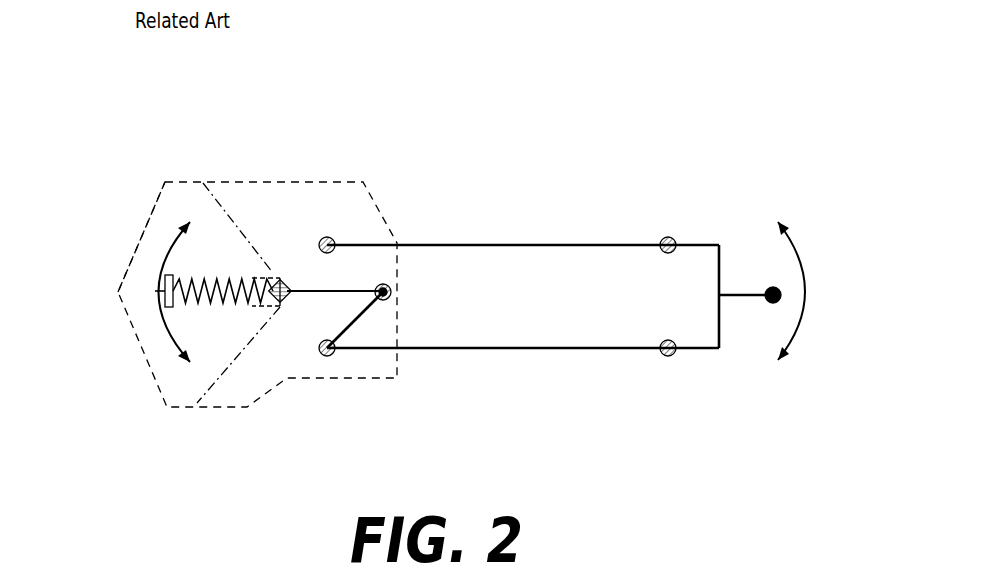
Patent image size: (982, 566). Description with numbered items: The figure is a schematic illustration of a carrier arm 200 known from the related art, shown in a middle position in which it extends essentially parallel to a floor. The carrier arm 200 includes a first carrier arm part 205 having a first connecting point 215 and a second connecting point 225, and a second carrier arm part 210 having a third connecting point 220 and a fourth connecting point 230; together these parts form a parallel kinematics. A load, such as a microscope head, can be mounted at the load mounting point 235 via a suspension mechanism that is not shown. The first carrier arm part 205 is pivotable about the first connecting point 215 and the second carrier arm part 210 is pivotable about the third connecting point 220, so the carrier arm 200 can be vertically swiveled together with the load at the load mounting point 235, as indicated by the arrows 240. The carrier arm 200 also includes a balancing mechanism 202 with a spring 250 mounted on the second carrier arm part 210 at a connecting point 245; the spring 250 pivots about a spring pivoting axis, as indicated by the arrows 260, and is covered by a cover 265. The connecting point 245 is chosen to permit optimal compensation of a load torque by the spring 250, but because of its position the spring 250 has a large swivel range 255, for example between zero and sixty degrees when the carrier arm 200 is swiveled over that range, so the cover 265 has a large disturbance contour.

The carrier arm 200 is at (636, 104).
The balancing mechanism 202 is at (265, 155).
The first carrier arm part 205 is at (458, 245).
The second carrier arm part 210 is at (478, 348).
The first connecting point 215 is at (331, 236).
The third connecting point 220 is at (335, 357).
The second connecting point 225 is at (672, 237).
The fourth connecting point 230 is at (668, 356).
The load mounting point 235 is at (773, 303).
The arrows 240 is at (807, 313).
The connecting point 245 is at (391, 294).
The spring 250 is at (223, 275).
The swivel range 255 is at (225, 372).
The arrows 260 is at (153, 317).
The cover 265 is at (125, 273).